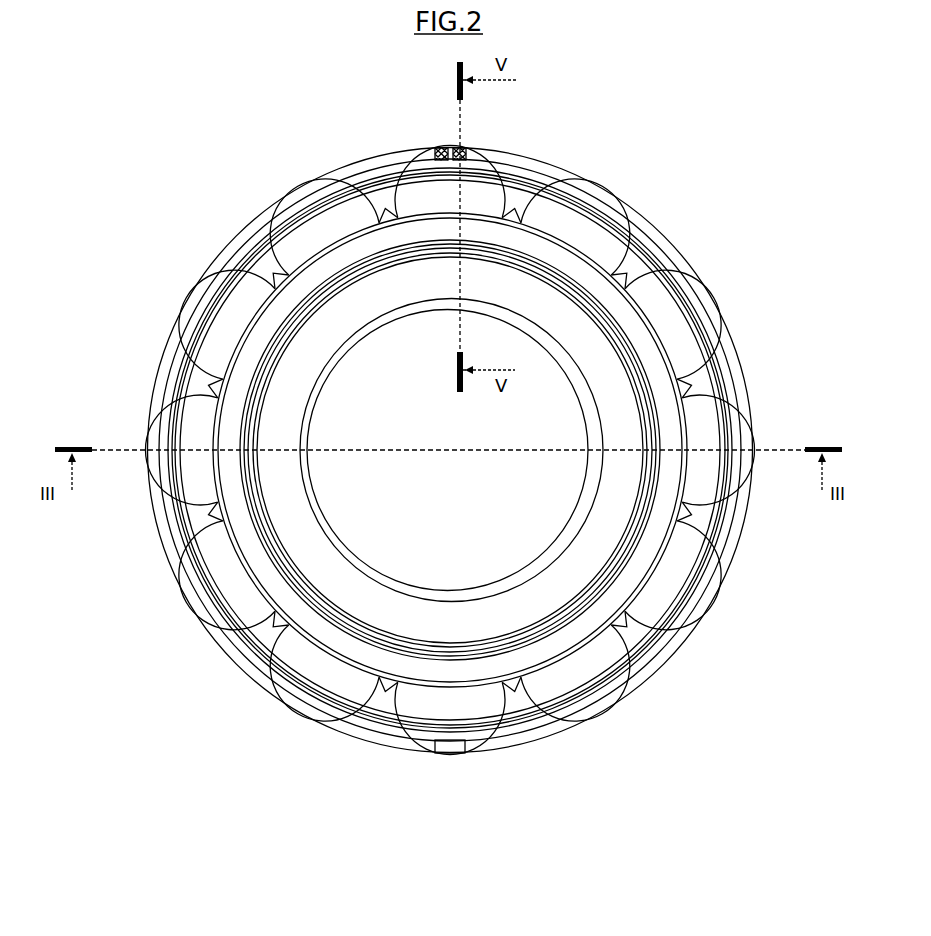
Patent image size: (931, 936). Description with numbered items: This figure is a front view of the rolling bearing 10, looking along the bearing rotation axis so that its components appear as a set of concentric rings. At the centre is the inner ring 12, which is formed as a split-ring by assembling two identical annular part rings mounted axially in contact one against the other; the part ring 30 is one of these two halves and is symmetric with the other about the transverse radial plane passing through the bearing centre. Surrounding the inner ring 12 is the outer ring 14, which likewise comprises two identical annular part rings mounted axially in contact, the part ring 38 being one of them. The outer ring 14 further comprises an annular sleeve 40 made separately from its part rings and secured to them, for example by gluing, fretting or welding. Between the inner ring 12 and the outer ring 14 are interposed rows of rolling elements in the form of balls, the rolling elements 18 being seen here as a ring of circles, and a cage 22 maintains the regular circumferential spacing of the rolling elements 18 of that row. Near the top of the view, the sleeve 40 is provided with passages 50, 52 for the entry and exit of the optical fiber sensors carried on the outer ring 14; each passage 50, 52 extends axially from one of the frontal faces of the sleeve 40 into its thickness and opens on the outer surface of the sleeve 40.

The rolling bearing 10 is at (213, 246).
The inner ring 12 is at (519, 693).
The outer ring 14 is at (640, 194).
The rolling elements 18 is at (232, 580).
The cage 22 is at (657, 530).
The part ring 30 is at (574, 573).
The part ring 38 is at (596, 195).
The sleeve 40 is at (559, 163).
The passage 50 is at (470, 148).
The passage 52 is at (445, 149).